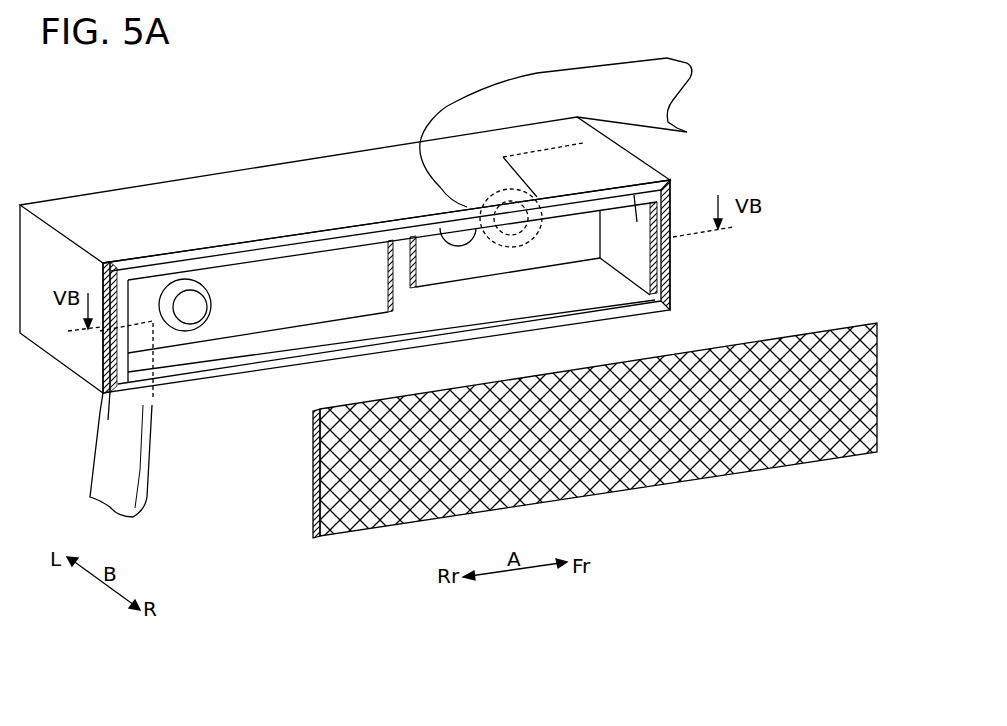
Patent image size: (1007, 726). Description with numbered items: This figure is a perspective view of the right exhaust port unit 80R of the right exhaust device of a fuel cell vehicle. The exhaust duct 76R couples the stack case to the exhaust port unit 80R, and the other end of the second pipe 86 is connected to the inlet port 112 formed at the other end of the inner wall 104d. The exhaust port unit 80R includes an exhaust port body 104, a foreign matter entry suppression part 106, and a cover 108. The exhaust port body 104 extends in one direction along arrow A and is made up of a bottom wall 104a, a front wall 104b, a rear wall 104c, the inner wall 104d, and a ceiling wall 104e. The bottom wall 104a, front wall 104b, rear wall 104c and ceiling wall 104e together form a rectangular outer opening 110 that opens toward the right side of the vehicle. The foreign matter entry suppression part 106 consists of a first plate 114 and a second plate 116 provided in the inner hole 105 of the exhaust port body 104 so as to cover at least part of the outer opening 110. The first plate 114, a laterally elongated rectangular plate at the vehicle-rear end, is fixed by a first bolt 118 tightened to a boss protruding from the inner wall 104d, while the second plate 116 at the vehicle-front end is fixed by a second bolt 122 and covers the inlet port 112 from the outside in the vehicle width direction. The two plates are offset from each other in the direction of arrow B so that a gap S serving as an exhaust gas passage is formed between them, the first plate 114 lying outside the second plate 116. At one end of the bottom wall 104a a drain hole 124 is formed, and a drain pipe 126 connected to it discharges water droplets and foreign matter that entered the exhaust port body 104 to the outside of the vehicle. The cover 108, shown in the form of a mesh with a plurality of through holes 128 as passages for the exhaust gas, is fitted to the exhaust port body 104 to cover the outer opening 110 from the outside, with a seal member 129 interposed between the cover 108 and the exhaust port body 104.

The exhaust port unit 80R is at (191, 142).
The exhaust duct 76R is at (590, 60).
The second pipe 86 is at (652, 60).
The exhaust port body 104 is at (110, 187).
The bottom wall 104a is at (173, 360).
The front wall 104b is at (657, 167).
The rear wall 104c is at (58, 343).
The inner wall 104d is at (250, 190).
The ceiling wall 104e is at (303, 173).
The inner hole 105 is at (407, 314).
The foreign matter entry suppression part 106 is at (255, 348).
The cover 108 is at (363, 538).
The outer opening 110 is at (622, 294).
The inlet port 112 is at (470, 200).
The first plate 114 is at (220, 330).
The second plate 116 is at (555, 247).
The first bolt 118 is at (196, 317).
The second bolt 122 is at (468, 247).
The drain hole 124 is at (142, 277).
The drain pipe 126 is at (113, 445).
The through holes 128 is at (633, 484).
The seal member 129 is at (628, 243).
The gap S is at (393, 282).